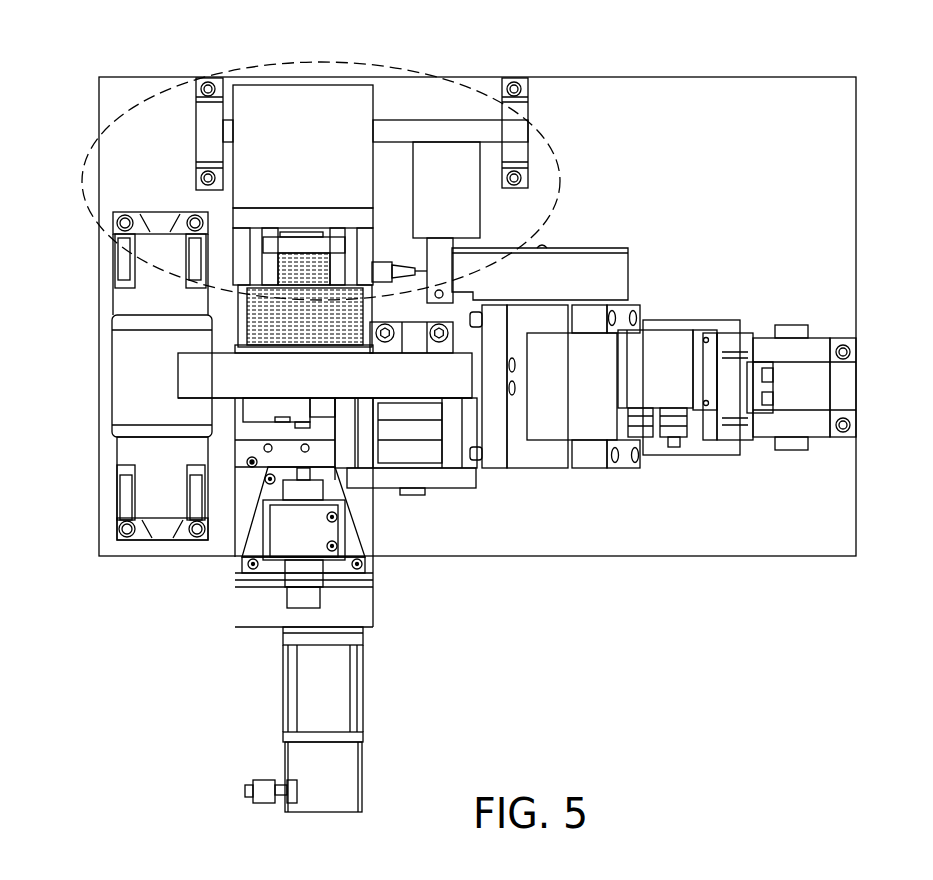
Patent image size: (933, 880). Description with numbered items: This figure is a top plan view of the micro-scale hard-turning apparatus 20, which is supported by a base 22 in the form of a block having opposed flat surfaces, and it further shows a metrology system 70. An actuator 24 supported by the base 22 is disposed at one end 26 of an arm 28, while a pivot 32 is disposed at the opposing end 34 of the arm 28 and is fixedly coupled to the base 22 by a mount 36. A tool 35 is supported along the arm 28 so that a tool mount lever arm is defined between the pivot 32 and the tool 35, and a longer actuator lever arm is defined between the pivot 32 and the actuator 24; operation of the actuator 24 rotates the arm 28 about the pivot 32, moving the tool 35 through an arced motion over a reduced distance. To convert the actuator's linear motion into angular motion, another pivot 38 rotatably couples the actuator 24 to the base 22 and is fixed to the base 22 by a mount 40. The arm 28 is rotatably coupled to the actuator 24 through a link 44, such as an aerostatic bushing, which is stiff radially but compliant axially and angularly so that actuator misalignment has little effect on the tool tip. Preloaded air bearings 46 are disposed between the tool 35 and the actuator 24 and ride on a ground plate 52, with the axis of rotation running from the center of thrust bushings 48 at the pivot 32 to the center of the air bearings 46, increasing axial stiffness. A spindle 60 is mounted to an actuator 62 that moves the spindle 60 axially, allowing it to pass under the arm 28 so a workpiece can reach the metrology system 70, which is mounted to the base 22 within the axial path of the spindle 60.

The micro-scale hard-turning apparatus 20 is at (840, 605).
The base 22 is at (827, 213).
The actuator 24 is at (645, 392).
The end of arm 26 is at (456, 385).
The arm 28 is at (193, 385).
The pivot 32 is at (143, 497).
The opposing end of arm 34 is at (193, 362).
The tool 35 is at (275, 418).
The mount 36 is at (115, 533).
The pivot 38 is at (793, 325).
The mount 40 is at (855, 418).
The link 44 is at (565, 408).
The preloaded air bearings 46 is at (405, 450).
The thrust bushings 48 is at (112, 322).
The plate 52 is at (383, 495).
The spindle 60 is at (285, 537).
The actuator 62 is at (365, 720).
The metrology system 70 is at (335, 62).